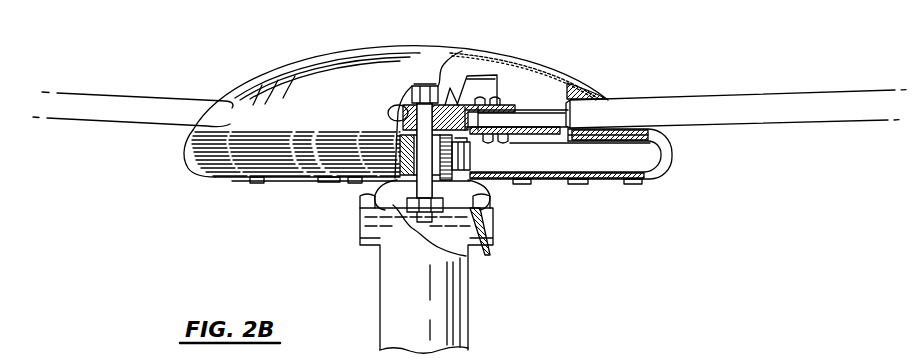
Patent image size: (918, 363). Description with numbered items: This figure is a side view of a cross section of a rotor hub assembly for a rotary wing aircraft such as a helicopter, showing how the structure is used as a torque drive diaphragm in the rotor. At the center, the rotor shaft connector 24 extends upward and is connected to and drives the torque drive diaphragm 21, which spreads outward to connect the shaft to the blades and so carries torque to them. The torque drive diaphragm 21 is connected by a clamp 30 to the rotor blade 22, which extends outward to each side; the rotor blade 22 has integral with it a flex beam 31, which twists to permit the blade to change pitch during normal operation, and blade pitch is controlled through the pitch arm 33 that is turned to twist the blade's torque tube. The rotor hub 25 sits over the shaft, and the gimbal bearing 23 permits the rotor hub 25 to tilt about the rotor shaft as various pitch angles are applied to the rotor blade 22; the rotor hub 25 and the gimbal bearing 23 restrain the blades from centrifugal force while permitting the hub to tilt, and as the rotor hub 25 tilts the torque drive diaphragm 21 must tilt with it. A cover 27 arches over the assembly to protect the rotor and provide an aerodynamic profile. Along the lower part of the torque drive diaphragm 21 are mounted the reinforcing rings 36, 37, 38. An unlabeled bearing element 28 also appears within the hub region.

The torque drive diaphragm 21 is at (674, 180).
The rotor blade 22 is at (109, 98).
The gimbal bearing 23 is at (422, 210).
The rotor shaft connector 24 is at (428, 309).
The rotor hub 25 is at (449, 101).
The cover 27 is at (310, 65).
The bearing nut 28 is at (470, 147).
The clamp 30 is at (594, 88).
The flex beam 31 is at (545, 110).
The pitch arm 33 is at (497, 77).
The reinforcing ring 36 is at (257, 183).
The reinforcing ring 37 is at (326, 181).
The reinforcing ring 38 is at (520, 182).